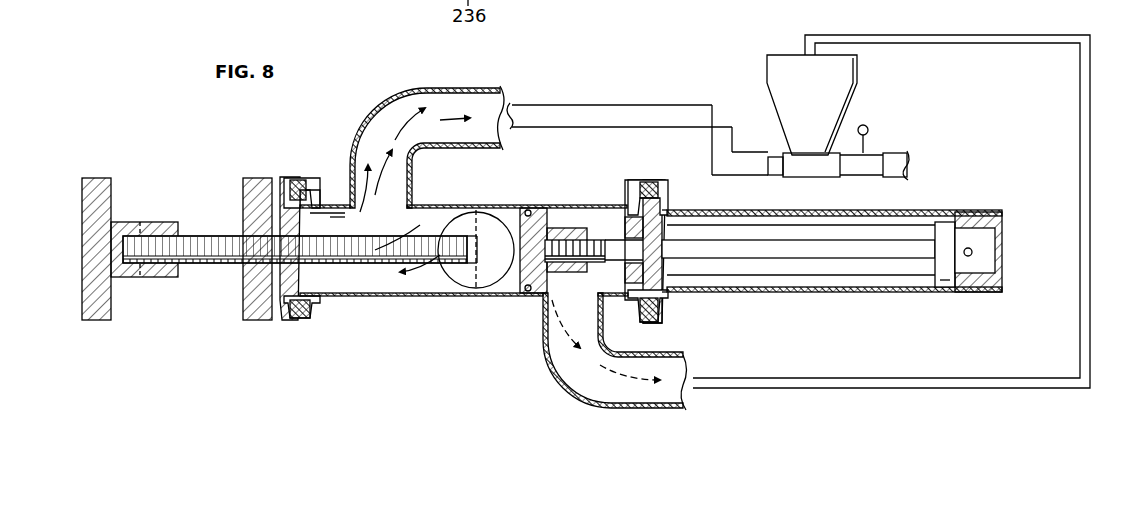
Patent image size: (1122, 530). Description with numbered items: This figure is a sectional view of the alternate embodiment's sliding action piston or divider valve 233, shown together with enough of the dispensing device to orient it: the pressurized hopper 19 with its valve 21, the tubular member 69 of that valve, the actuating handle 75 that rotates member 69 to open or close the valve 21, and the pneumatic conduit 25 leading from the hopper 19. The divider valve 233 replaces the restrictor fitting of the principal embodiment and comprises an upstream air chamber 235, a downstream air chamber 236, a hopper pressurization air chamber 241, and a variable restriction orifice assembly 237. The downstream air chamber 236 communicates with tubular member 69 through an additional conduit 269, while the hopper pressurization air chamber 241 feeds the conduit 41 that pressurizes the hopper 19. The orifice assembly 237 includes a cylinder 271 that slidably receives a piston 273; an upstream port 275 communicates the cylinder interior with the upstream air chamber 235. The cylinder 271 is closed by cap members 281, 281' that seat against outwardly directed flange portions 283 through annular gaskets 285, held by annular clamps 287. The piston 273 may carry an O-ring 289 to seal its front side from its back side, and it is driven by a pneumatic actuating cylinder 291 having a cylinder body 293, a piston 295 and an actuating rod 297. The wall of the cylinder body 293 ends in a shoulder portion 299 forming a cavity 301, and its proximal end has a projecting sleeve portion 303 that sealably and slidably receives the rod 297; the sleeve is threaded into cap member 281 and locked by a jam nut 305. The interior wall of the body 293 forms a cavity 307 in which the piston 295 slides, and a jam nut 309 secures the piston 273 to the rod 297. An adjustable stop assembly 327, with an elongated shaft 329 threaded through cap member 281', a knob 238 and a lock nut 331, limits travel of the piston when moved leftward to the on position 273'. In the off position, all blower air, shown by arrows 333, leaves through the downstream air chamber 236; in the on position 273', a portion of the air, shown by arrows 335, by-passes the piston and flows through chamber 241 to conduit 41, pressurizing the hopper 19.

The pressurized hopper 19 is at (813, 92).
The valve 21 is at (820, 168).
The pneumatic conduit 25 is at (900, 165).
The conduit 41 is at (960, 390).
The tubular member 69 is at (775, 158).
The actuating handle 75 is at (867, 126).
The divider valve 233 is at (215, 140).
The upstream air chamber 235 is at (490, 296).
The downstream air chamber 236 is at (387, 128).
The variable restriction orifice assembly 237 is at (500, 345).
The knob 238 is at (100, 190).
The hopper pressurization air chamber 241 is at (600, 385).
The conduit 269 is at (614, 118).
The cylinder 271 is at (370, 298).
The piston 273 is at (553, 228).
The piston in on position 273' is at (532, 175).
The upstream port 275 is at (470, 228).
The cap member 281 is at (671, 170).
The cap member 281' is at (282, 159).
The flange portion 283 is at (313, 200).
The annular gasket 285 is at (272, 322).
The annular clamp 287 is at (300, 322).
The O-ring 289 is at (525, 288).
The pneumatic actuating cylinder 291 is at (1017, 152).
The cylinder body 293 is at (980, 295).
The piston 295 is at (935, 288).
The actuating rod 297 is at (890, 265).
The shoulder portion 299 is at (945, 218).
The cavity 301 is at (988, 250).
The sleeve portion 303 is at (670, 228).
The jam nut 305 is at (634, 217).
The cavity 307 is at (845, 285).
The jam nut 309 is at (583, 228).
The adjustable stop assembly 327 is at (210, 302).
The elongated shaft 329 is at (200, 262).
The lock nut 331 is at (252, 320).
The air 333 is at (445, 228).
The air 335 is at (548, 350).